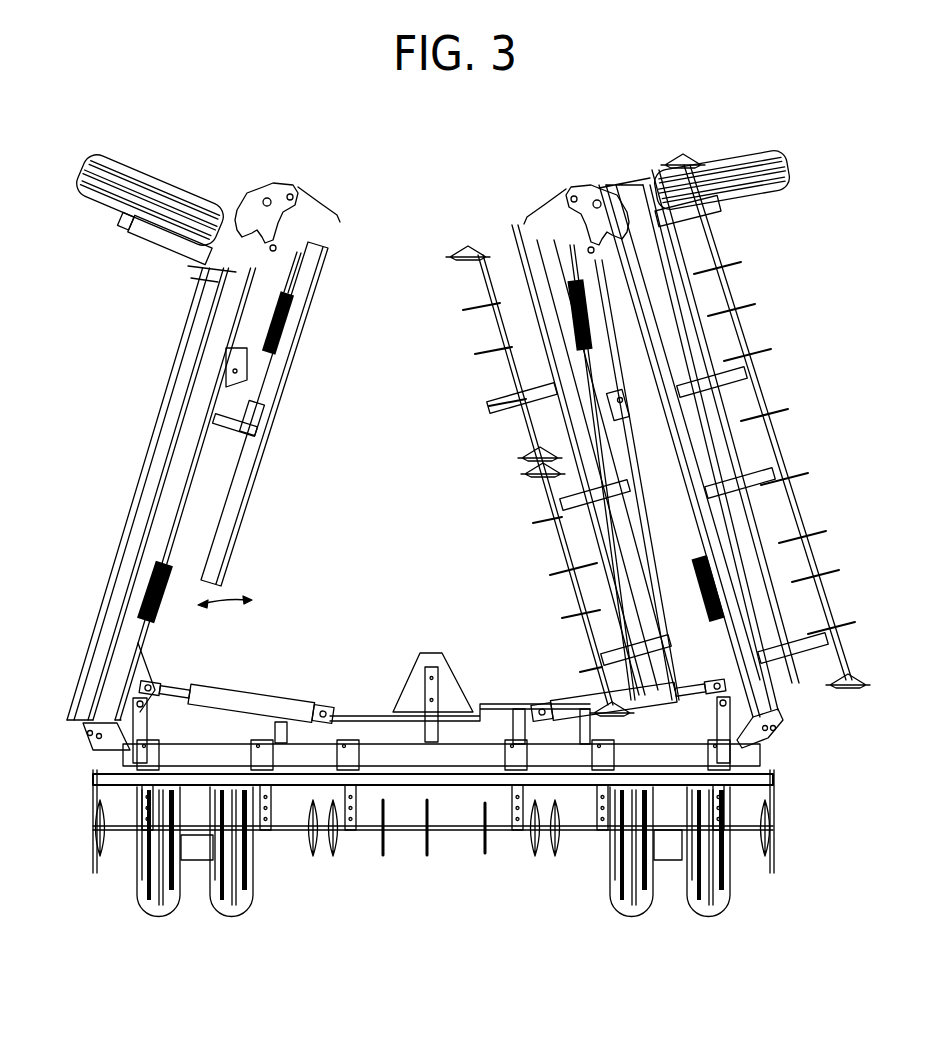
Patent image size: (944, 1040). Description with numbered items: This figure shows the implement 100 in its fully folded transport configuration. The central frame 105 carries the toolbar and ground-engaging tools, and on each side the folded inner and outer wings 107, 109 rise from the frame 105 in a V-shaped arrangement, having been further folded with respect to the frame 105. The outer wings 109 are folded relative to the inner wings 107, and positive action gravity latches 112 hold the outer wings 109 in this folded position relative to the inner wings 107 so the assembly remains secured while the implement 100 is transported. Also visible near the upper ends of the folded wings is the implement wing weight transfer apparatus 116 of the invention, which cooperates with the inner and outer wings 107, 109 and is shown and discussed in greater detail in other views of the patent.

The implement 100 is at (595, 971).
The frame 105 is at (94, 938).
The inner wings 107 is at (196, 276).
The outer wings 109 is at (381, 232).
The positive action gravity latches 112 is at (289, 437).
The implement wing weight transfer apparatus 116 is at (266, 164).